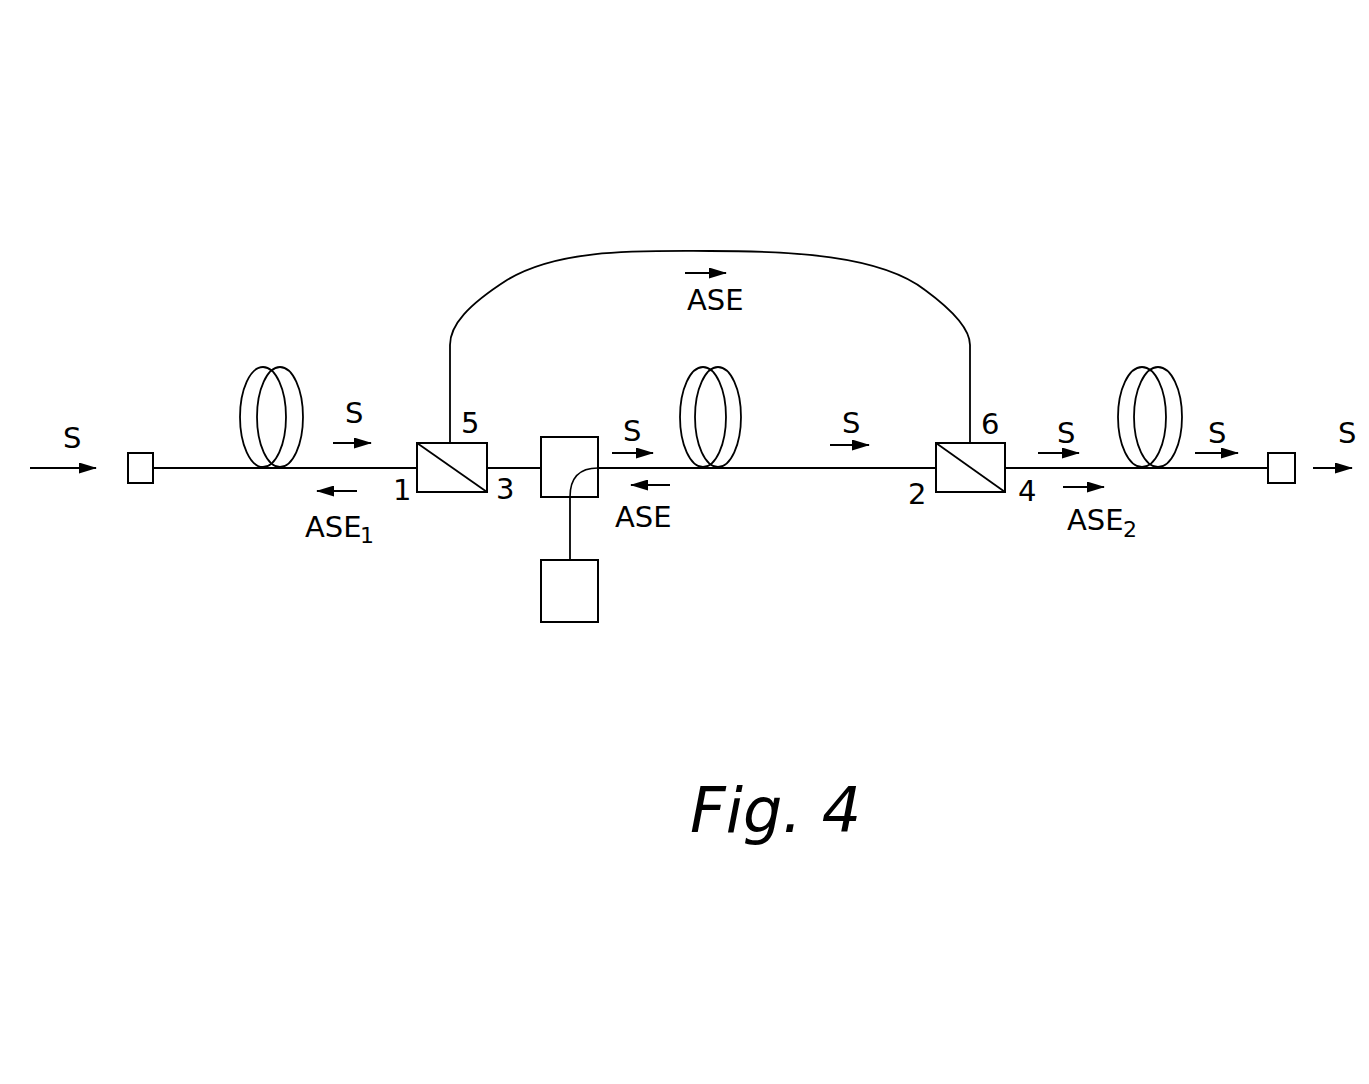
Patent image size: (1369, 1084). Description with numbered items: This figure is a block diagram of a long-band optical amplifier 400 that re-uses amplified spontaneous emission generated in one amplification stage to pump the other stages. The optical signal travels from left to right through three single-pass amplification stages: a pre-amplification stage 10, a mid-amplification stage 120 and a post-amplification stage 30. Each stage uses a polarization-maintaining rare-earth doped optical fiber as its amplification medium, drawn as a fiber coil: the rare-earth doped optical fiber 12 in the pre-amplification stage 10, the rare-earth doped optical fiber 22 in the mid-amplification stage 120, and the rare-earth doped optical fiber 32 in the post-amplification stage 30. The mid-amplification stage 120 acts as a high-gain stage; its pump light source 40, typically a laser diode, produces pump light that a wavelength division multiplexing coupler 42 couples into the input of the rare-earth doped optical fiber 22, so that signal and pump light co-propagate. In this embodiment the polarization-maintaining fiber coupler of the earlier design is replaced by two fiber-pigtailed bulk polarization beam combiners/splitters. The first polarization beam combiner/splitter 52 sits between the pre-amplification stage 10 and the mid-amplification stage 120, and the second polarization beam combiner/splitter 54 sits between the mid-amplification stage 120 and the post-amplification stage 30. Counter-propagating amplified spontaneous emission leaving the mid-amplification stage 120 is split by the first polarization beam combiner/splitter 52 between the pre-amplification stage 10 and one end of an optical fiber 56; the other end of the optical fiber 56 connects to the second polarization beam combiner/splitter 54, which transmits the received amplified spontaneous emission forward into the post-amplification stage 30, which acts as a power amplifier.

The optical amplifier 400 is at (1120, 242).
The pre-amplification stage 10 is at (244, 360).
The rare-earth doped optical fiber 12 is at (297, 378).
The rare-earth doped optical fiber 22 is at (742, 398).
The post-amplification stage 30 is at (1184, 363).
The rare-earth doped optical fiber 32 is at (1128, 378).
The pump light source 40 is at (541, 590).
The wavelength division multiplexing coupler 42 is at (575, 437).
The first polarization beam combiner/splitter 52 is at (438, 492).
The second polarization beam combiner/splitter 54 is at (970, 492).
The optical fiber 56 is at (915, 285).
The mid-amplification stage 120 is at (612, 386).